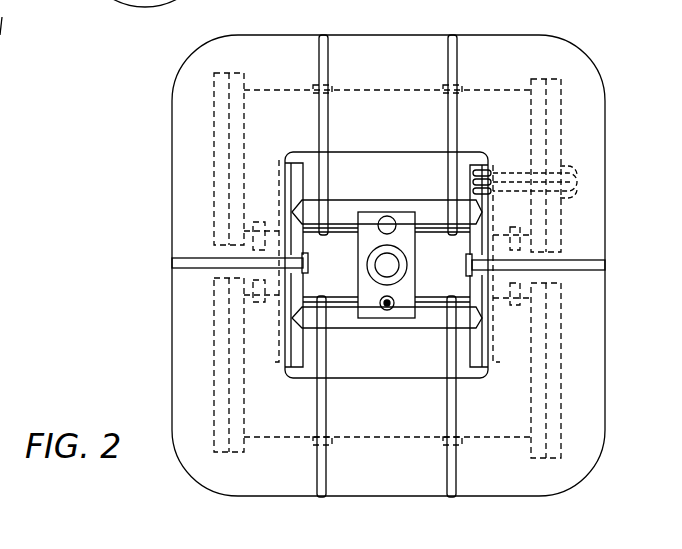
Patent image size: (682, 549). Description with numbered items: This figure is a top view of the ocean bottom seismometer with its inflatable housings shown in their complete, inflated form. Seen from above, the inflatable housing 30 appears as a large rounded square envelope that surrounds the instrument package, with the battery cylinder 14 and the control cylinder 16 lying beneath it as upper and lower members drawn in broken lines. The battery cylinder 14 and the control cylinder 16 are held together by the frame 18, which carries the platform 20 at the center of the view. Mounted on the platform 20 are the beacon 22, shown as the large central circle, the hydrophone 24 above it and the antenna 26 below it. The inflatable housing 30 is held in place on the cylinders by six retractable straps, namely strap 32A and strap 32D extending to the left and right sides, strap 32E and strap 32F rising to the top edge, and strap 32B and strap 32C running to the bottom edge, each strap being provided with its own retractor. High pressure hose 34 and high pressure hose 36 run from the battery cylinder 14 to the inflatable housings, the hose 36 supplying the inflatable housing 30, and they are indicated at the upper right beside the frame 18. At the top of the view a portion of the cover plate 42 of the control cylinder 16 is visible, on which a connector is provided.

The battery cylinder 14 is at (503, 93).
The control cylinder 16 is at (503, 440).
The frame 18 is at (342, 215).
The platform 20 is at (413, 287).
The beacon 22 is at (405, 268).
The hydrophone 24 is at (387, 216).
The antenna 26 is at (387, 311).
The inflatable housing 30 is at (604, 379).
The retractable strap 32A is at (578, 272).
The retractable strap 32B is at (446, 500).
The retractable strap 32C is at (318, 500).
The retractable strap 32D is at (172, 262).
The retractable strap 32E is at (326, 36).
The retractable strap 32F is at (455, 36).
The high pressure hose 34 is at (565, 192).
The high pressure hose 36 is at (567, 166).
The cover plate 42 is at (148, 8).